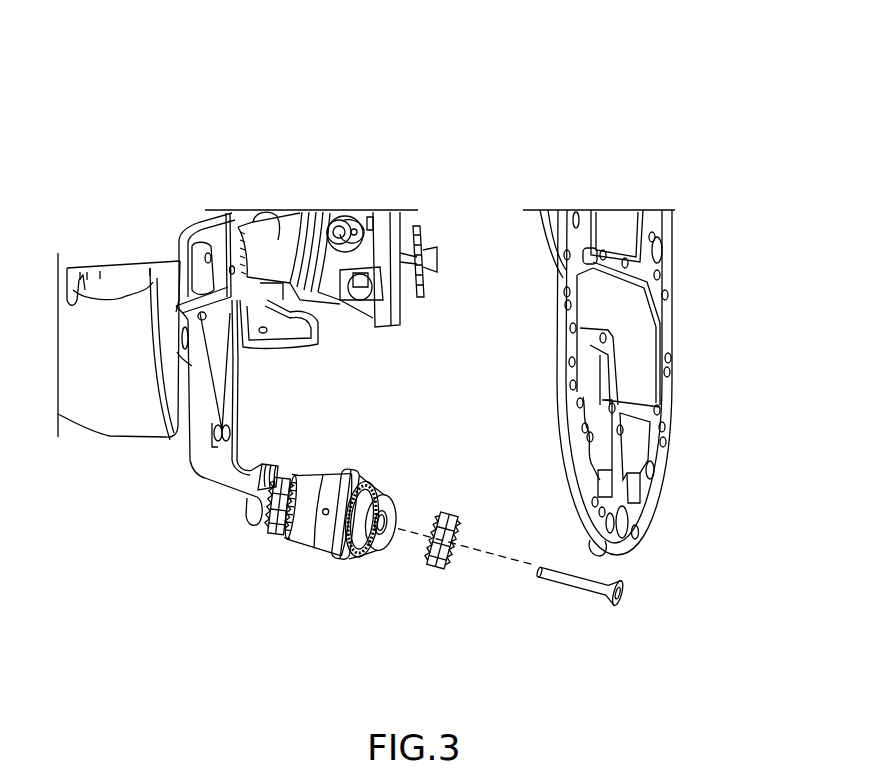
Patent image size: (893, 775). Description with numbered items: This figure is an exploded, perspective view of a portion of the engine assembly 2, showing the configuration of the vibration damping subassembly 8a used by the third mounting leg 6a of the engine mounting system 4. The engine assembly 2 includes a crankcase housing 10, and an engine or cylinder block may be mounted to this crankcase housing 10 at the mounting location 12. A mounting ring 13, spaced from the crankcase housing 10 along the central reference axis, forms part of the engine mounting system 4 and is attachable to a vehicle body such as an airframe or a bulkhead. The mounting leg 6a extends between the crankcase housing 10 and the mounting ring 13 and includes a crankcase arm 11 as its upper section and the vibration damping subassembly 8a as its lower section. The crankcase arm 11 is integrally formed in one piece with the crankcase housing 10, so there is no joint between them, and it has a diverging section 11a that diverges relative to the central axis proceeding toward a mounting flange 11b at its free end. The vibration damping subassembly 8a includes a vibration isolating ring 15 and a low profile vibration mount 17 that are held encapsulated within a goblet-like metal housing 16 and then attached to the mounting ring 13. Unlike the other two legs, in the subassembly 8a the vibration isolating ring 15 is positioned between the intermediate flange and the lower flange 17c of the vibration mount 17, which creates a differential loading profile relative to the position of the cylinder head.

The engine assembly 2 is at (493, 74).
The engine mounting system 4 is at (173, 622).
The mounting leg 6a is at (247, 613).
The vibration damping subassembly 8a is at (310, 572).
The crankcase housing 10 is at (107, 433).
The crankcase arm 11 is at (195, 477).
The diverging section 11a is at (231, 480).
The mounting flange 11b is at (263, 527).
The mounting location 12 is at (133, 248).
The mounting ring 13 is at (670, 282).
The vibration isolating ring 15 is at (295, 473).
The metal housing 16 is at (335, 485).
The vibration mount 17 is at (393, 458).
The lower flange 17c is at (380, 557).